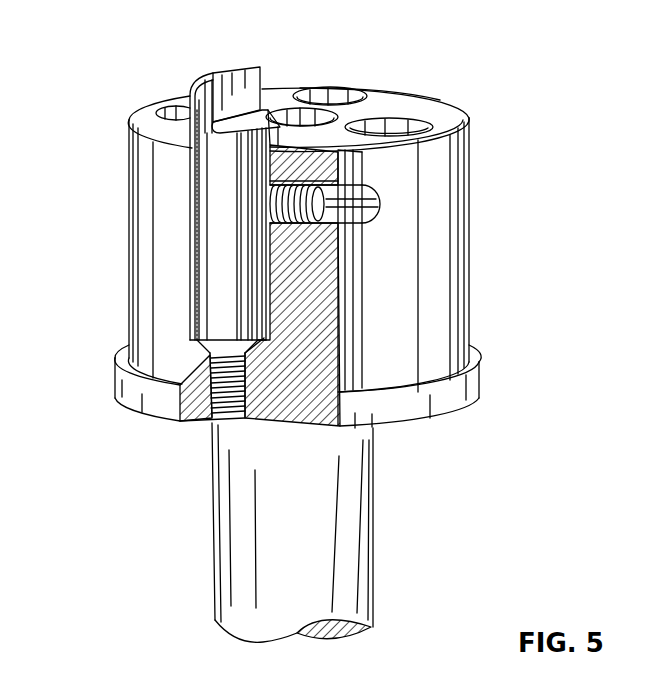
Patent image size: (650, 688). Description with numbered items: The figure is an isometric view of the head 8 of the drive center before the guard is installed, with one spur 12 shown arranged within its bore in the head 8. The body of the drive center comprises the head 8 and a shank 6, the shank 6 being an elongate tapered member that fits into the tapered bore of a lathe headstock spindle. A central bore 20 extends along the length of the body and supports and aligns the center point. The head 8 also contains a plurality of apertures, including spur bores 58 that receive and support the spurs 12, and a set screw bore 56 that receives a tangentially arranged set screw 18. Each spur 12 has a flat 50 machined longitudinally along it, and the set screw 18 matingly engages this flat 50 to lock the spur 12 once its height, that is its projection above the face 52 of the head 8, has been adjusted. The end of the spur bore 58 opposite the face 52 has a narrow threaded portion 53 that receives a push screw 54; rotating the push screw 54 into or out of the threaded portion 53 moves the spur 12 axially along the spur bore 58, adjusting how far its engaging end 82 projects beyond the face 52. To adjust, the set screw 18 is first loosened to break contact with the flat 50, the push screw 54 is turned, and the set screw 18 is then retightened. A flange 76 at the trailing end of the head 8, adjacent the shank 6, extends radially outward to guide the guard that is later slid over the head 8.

The shank 6 is at (377, 505).
The head 8 is at (470, 200).
The spur 12 is at (210, 65).
The set screw 18 is at (360, 230).
The central bore 20 is at (295, 115).
The flat 50 is at (262, 265).
The face 52 is at (392, 92).
The narrow threaded portion 53 is at (210, 370).
The push screw 54 is at (210, 415).
The set screw bore 56 is at (363, 203).
The spur bore 58 is at (178, 110).
The flange 76 is at (489, 378).
The engaging end 82 is at (243, 66).